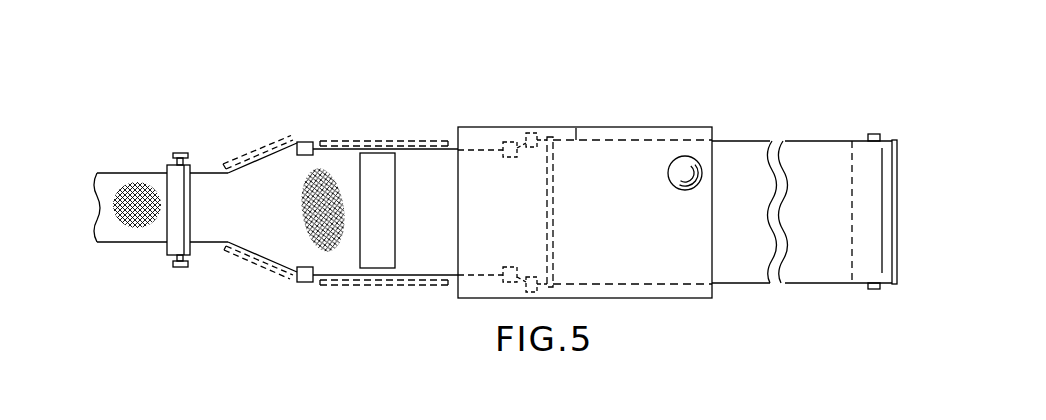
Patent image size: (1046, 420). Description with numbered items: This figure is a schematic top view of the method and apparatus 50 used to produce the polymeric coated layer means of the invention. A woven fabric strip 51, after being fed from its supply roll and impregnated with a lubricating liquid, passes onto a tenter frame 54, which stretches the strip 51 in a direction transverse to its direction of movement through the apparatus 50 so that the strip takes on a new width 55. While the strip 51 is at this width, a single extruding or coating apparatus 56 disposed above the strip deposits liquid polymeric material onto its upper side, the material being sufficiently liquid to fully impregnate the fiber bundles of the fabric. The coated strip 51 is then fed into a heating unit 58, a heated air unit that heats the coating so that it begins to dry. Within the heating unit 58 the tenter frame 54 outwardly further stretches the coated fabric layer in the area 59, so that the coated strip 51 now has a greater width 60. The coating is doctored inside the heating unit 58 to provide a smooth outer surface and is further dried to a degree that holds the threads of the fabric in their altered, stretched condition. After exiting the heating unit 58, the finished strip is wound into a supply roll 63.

The method and apparatus 50 is at (555, 75).
The woven fabric strip 51 is at (117, 183).
The tenter frame 54 is at (261, 139).
The new width 55 is at (327, 283).
The coating apparatus 56 is at (395, 167).
The heating unit 58 is at (620, 122).
The area of further stretching 59 is at (521, 122).
The width 60 is at (576, 128).
The supply roll 63 is at (893, 158).